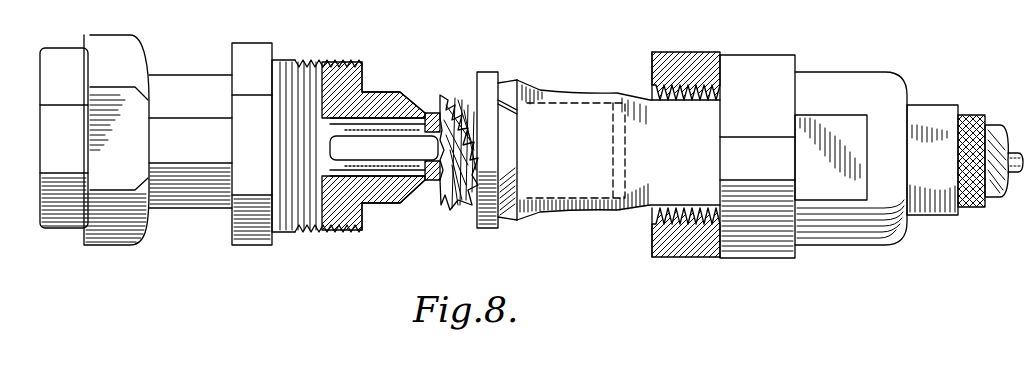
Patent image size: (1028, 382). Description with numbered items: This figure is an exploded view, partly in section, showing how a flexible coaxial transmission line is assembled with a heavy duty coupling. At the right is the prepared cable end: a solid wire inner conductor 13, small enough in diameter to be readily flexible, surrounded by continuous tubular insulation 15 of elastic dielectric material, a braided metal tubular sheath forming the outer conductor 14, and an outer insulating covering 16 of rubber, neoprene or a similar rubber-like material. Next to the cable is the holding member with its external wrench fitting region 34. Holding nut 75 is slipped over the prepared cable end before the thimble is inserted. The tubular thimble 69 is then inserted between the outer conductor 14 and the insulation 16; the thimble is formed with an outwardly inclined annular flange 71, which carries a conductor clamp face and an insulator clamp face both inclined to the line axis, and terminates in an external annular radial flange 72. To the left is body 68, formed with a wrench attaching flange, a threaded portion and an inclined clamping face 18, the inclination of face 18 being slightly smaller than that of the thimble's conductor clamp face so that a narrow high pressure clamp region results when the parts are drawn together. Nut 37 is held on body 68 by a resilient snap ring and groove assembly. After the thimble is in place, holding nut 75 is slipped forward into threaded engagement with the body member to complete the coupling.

The nut 37 is at (56, 58).
The body 68 is at (415, 107).
The inclined clamping face 18 is at (451, 152).
The tubular thimble 69 is at (507, 88).
The external annular radial flange 72 is at (487, 230).
The outwardly inclined annular flange 71 is at (508, 219).
The holding nut 75 is at (683, 52).
The external wrench fitting region 34 is at (840, 122).
The outer insulating covering 16 is at (936, 112).
The outer conductor 14 is at (978, 117).
The tubular insulation 15 is at (993, 198).
The inner conductor 13 is at (1016, 175).